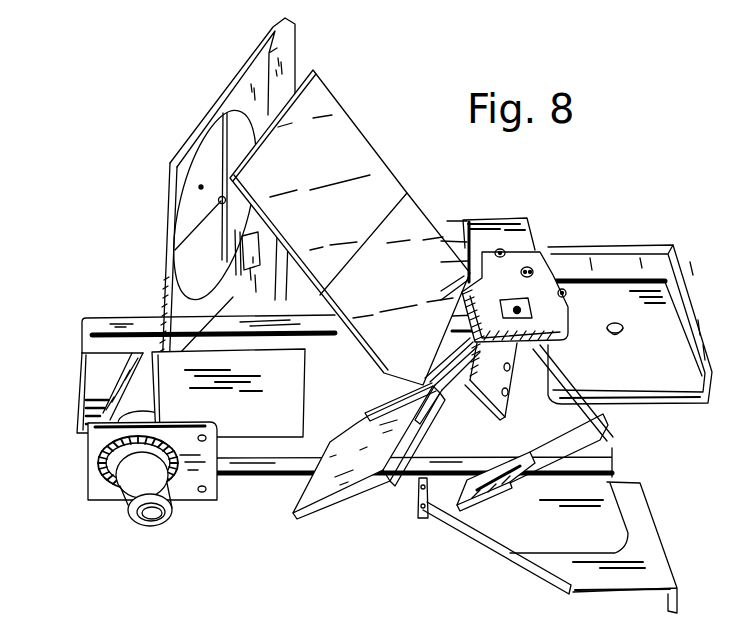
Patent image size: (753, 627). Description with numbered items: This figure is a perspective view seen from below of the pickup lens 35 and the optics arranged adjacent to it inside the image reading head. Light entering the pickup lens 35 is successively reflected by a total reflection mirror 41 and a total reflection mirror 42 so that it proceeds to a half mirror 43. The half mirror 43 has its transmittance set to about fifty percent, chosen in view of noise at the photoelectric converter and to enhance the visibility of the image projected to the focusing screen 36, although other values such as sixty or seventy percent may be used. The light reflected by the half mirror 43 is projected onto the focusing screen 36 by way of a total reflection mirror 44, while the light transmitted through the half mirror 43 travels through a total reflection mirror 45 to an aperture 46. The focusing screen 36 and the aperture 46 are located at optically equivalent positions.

The pickup lens 35 is at (160, 524).
The focusing screen 36 is at (199, 128).
The total reflection mirror 41 is at (142, 397).
The total reflection mirror 42 is at (291, 404).
The half mirror 43 is at (320, 497).
The total reflection mirror 44 is at (422, 235).
The total reflection mirror 45 is at (508, 487).
The aperture 46 is at (523, 310).